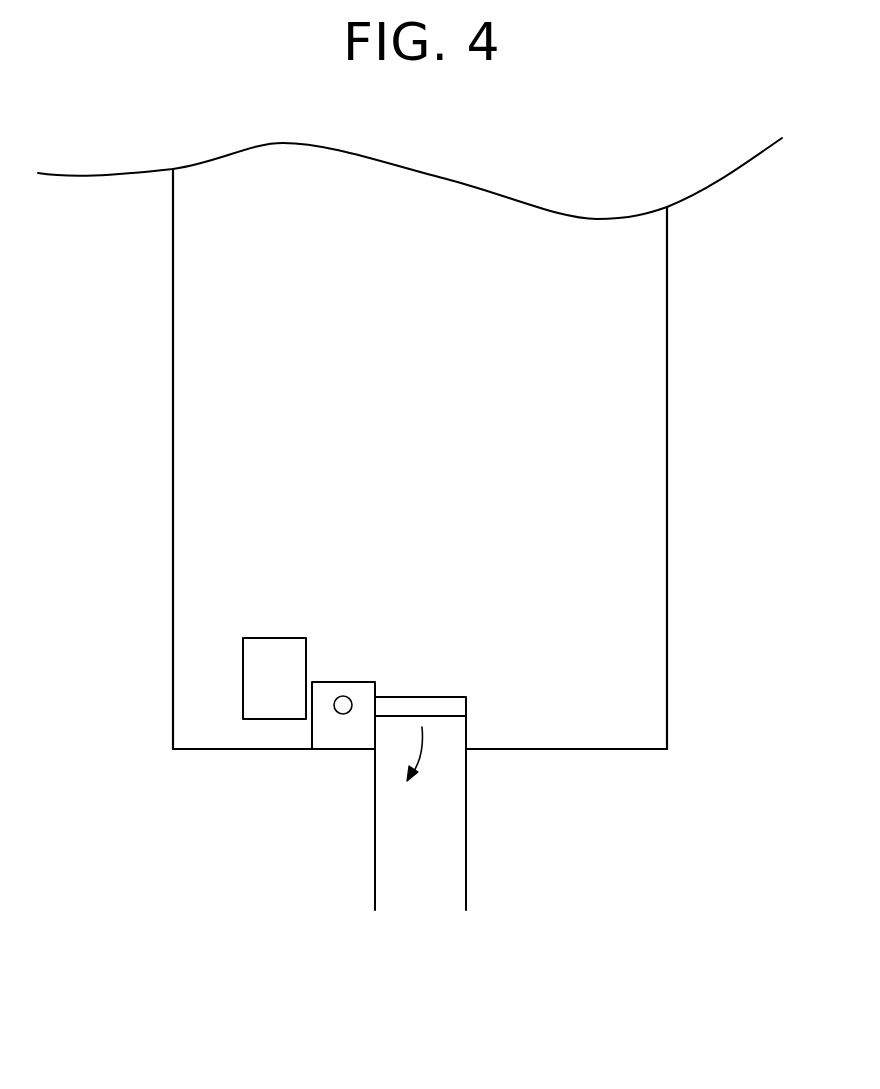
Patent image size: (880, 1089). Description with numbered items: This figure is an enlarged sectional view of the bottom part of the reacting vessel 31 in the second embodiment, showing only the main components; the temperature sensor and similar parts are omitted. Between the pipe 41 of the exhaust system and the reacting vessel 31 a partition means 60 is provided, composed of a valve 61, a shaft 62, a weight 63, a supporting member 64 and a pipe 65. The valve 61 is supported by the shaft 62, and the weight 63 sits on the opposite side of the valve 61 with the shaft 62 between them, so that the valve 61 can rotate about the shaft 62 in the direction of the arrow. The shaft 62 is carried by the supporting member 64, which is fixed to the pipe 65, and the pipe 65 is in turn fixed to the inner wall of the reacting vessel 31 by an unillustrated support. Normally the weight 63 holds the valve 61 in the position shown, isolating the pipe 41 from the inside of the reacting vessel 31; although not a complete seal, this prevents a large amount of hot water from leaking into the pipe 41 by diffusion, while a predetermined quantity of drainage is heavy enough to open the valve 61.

The reacting vessel 31 is at (667, 540).
The pipe 41 is at (466, 813).
The partition means 60 is at (343, 615).
The valve 61 is at (455, 697).
The shaft 62 is at (345, 696).
The weight 63 is at (293, 638).
The supporting member 64 is at (333, 735).
The pipe 65 is at (466, 727).